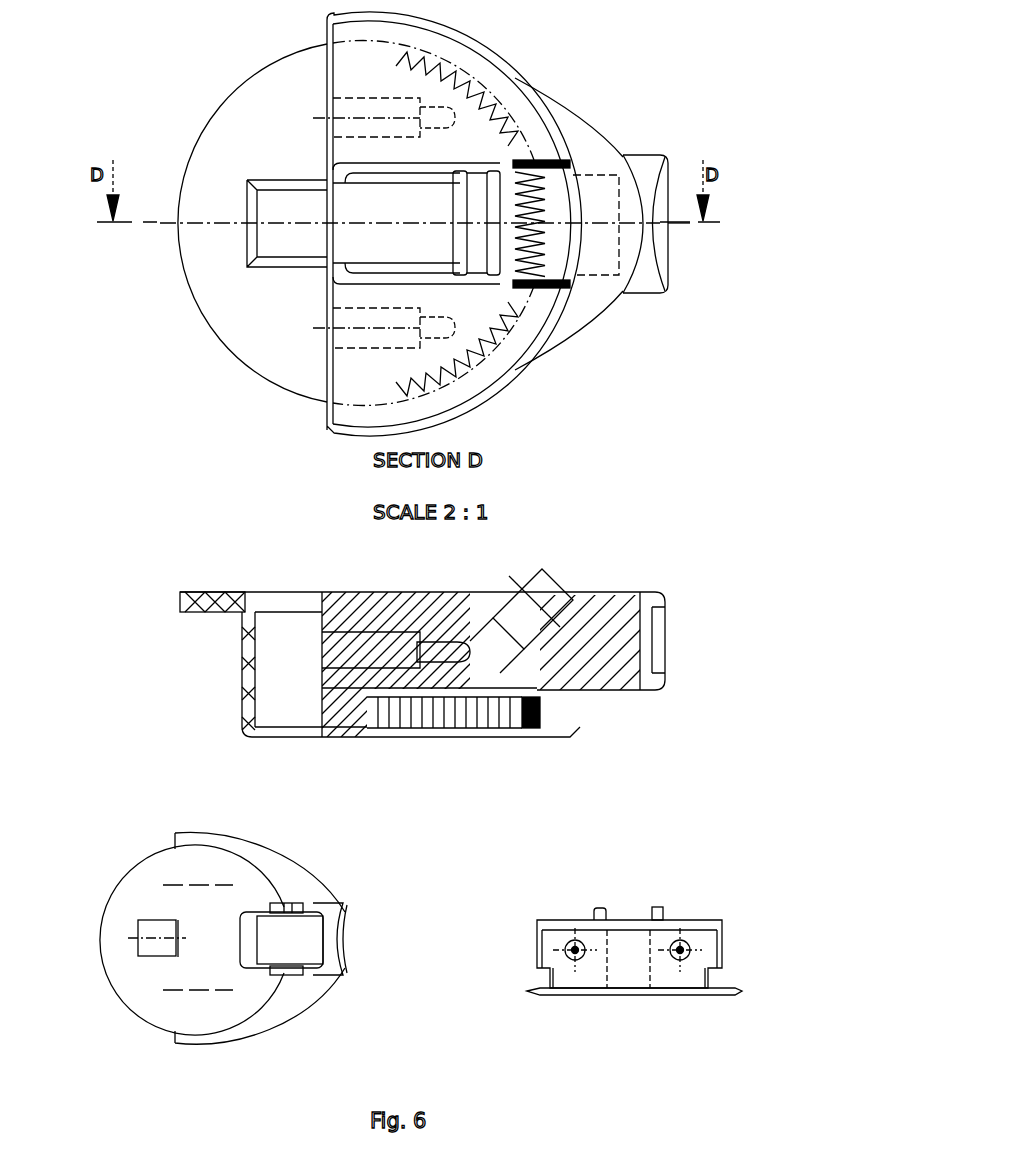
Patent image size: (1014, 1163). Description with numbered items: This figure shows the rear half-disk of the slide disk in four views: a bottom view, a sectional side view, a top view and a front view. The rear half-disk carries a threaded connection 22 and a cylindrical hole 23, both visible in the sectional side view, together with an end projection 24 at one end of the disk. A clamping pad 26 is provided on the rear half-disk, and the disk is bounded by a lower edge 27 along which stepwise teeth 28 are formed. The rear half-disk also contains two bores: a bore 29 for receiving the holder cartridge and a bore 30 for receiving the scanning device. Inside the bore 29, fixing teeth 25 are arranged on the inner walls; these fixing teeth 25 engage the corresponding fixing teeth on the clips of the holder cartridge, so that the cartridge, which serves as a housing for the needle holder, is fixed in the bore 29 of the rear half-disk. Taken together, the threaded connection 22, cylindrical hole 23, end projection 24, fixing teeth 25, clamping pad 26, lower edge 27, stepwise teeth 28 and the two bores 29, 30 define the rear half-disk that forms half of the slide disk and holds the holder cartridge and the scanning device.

The threaded connection 22 is at (443, 107).
The cylindrical hole 23 is at (353, 340).
The end projection 24 is at (253, 213).
The fixing teeth 25 is at (548, 585).
The clamping pad 26 is at (337, 940).
The lower edge 27 is at (183, 840).
The stepwise teeth 28 is at (500, 340).
The bore for receiving the holder cartridge 29 is at (380, 200).
The bore for receiving the scanning device 30 is at (280, 602).